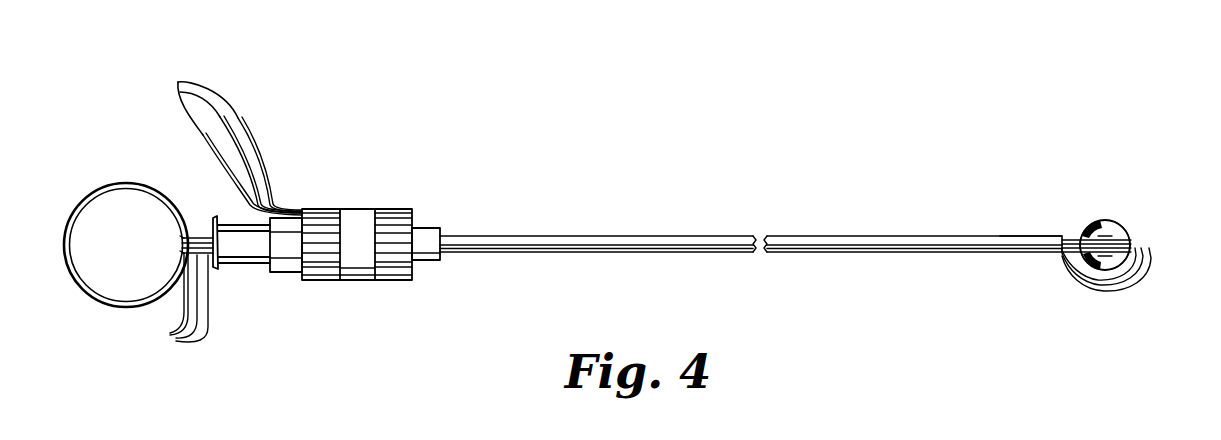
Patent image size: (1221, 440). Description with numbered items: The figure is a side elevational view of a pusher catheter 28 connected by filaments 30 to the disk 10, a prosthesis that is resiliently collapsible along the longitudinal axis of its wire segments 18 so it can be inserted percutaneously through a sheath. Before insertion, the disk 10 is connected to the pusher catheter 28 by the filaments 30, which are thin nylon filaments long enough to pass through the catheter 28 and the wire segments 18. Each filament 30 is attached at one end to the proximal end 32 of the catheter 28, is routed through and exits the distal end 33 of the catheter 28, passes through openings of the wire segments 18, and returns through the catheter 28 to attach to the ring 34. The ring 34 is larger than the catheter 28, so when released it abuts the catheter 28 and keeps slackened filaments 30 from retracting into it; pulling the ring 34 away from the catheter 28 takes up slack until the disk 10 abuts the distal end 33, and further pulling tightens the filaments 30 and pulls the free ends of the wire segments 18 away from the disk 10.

The disk 10 is at (1119, 219).
The wire segments 18 is at (1091, 220).
The pusher catheter 28 is at (322, 209).
The filaments 30 is at (178, 82).
The proximal end 32 is at (303, 281).
The distal end 33 is at (1044, 235).
The ring 34 is at (116, 183).